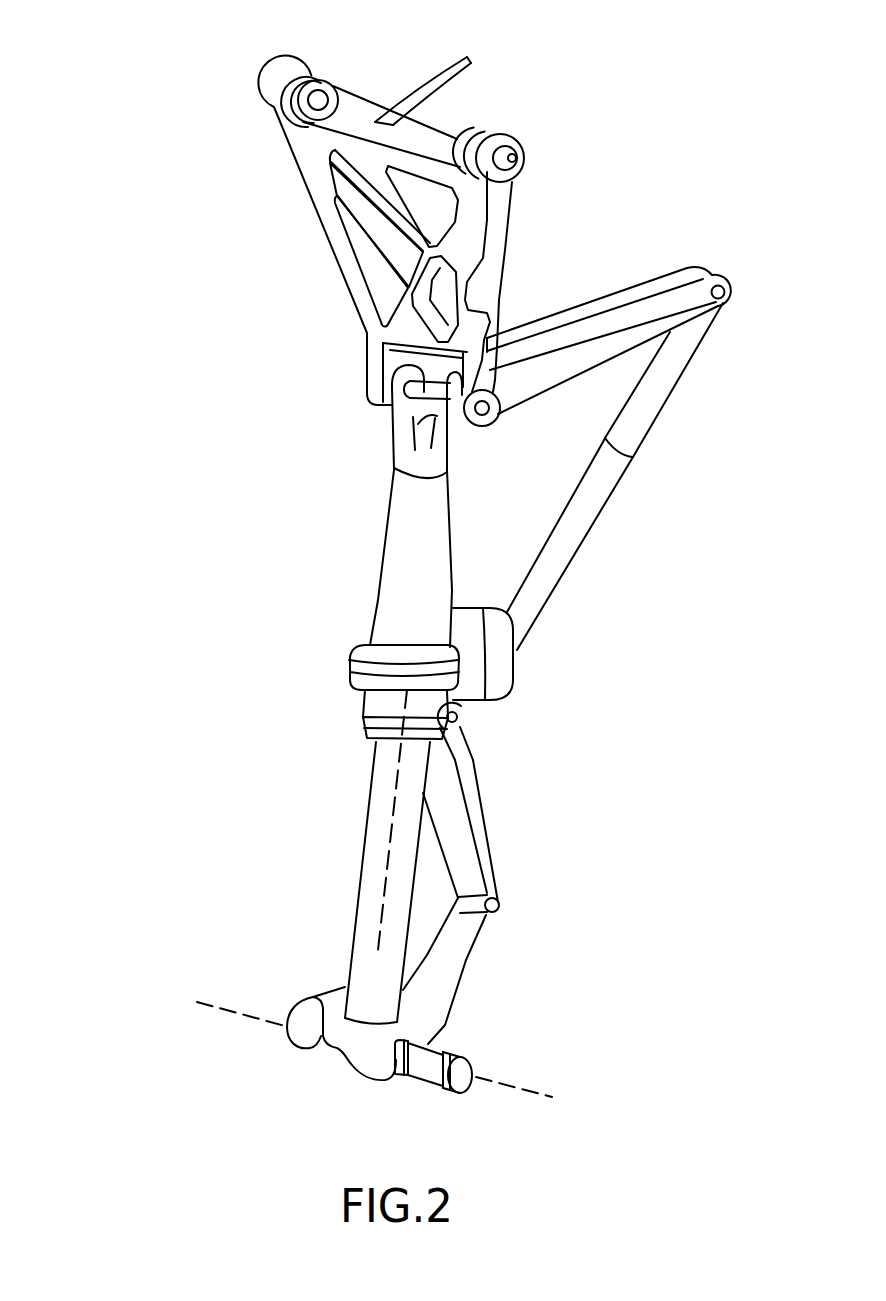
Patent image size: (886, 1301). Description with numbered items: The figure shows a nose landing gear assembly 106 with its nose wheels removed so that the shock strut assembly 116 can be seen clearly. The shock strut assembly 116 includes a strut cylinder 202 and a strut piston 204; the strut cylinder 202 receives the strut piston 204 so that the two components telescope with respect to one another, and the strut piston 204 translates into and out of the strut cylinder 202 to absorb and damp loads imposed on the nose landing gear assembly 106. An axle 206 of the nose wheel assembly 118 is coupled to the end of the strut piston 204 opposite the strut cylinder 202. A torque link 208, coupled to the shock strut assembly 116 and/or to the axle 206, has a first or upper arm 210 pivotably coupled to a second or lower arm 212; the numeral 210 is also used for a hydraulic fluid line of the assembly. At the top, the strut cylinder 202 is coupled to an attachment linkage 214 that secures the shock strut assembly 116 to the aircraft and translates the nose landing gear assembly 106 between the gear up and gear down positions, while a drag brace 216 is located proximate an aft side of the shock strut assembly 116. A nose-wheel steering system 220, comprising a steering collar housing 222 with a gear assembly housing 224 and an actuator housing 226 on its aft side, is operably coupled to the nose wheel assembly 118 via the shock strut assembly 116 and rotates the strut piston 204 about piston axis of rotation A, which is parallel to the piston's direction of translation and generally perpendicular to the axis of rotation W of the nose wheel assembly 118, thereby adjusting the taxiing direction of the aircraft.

The nose landing gear assembly 106 is at (107, 88).
The shock strut assembly 116 is at (337, 543).
The nose wheel assembly 118 is at (500, 1057).
The strut cylinder 202 is at (437, 535).
The strut piston 204 is at (360, 933).
The axle 206 is at (427, 1075).
The torque link 208 is at (538, 820).
The first arm 210 is at (440, 84).
The second arm 212 is at (458, 945).
The attachment linkage 214 is at (348, 252).
The drag brace 216 is at (600, 477).
The nose-wheel steering system 220 is at (490, 575).
The steering collar housing 222 is at (355, 672).
The gear assembly housing 224 is at (470, 678).
The actuator housing 226 is at (503, 661).
The piston axis of rotation A is at (395, 825).
The axis of rotation of nose wheel assembly W is at (495, 1083).